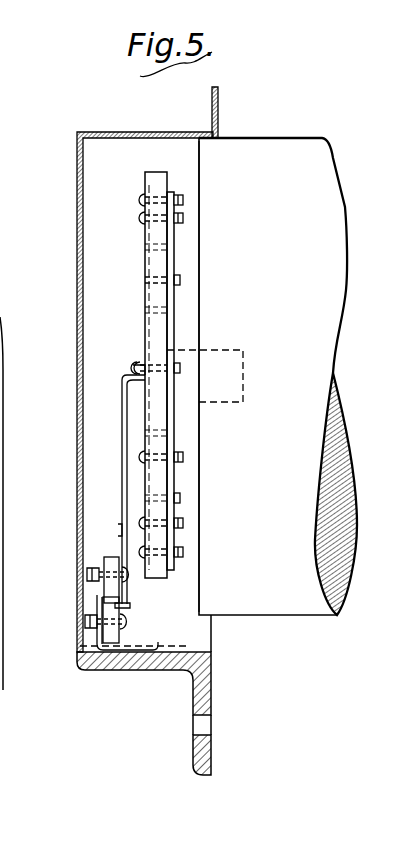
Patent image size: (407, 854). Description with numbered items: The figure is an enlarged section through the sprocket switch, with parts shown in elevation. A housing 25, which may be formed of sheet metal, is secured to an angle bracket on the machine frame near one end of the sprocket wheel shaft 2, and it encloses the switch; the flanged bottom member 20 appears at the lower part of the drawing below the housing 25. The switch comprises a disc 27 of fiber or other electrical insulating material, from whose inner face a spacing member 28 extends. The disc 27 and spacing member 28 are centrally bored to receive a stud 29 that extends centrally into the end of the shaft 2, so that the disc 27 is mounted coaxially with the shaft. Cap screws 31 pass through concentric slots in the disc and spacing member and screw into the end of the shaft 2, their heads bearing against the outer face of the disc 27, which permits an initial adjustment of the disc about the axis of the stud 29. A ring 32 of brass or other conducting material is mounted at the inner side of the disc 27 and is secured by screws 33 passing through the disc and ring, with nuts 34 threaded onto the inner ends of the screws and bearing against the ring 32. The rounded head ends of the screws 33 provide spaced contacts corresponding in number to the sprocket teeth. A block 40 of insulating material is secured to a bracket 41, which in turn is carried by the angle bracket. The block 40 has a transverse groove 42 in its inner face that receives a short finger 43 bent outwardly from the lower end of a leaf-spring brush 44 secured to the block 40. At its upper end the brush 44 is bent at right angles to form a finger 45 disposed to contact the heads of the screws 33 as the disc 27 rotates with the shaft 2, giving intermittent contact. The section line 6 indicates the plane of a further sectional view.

The sprocket wheel shaft 2 is at (227, 150).
The section line 6- 6 is at (85, 147).
The bottom flange 20 is at (128, 670).
The housing 25 is at (77, 238).
The disc 27 is at (145, 262).
The spacing member 28 is at (192, 297).
The stud 29 is at (219, 402).
The cap screws 31 is at (133, 385).
The ring 32 is at (174, 232).
The screws 33 is at (184, 214).
The nuts 34 is at (183, 200).
The block 40 is at (104, 558).
The bracket 41 is at (97, 639).
The groove 42 is at (102, 605).
The finger 43 is at (130, 605).
The brush 44 is at (116, 530).
The finger 45 is at (130, 374).